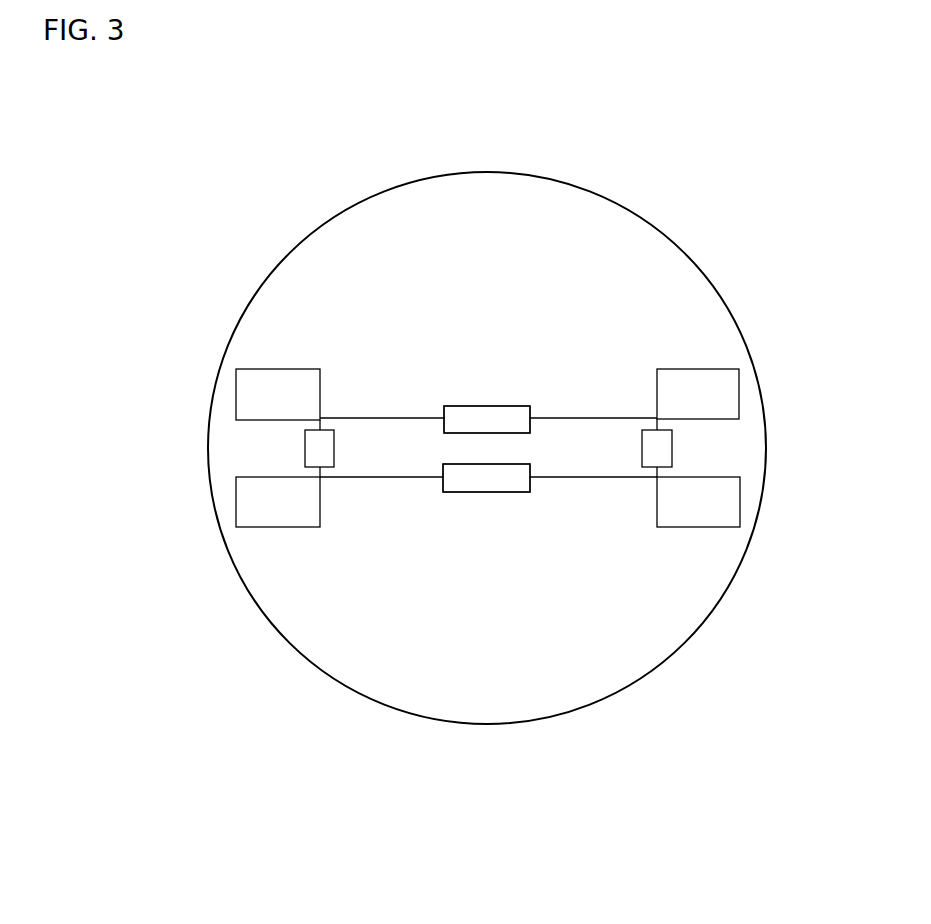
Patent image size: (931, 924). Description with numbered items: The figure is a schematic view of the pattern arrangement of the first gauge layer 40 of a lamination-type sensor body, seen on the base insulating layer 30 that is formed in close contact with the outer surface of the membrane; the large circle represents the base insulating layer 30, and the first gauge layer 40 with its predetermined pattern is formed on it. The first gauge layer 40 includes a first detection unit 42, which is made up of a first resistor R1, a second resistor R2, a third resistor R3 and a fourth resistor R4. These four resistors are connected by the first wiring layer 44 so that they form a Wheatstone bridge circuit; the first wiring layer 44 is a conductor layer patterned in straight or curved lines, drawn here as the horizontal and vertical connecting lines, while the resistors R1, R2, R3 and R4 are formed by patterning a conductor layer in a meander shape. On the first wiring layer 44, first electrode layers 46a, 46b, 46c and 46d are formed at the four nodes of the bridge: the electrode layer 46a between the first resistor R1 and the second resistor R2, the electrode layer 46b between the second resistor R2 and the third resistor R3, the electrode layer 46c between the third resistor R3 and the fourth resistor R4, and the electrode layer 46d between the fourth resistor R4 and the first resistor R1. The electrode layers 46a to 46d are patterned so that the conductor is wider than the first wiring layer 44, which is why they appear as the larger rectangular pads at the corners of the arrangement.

The base insulating layer 30 is at (552, 201).
The first gauge layer 40 is at (527, 394).
The first detection unit 42 is at (534, 502).
The first wiring layer 44 is at (380, 478).
The first electrode layer 46a is at (273, 512).
The first electrode layer 46b is at (720, 503).
The first electrode layer 46c is at (697, 383).
The first electrode layer 46d is at (270, 382).
The first resistor R1 is at (317, 448).
The second resistor R2 is at (475, 482).
The third resistor R3 is at (660, 448).
The fourth resistor R4 is at (483, 415).